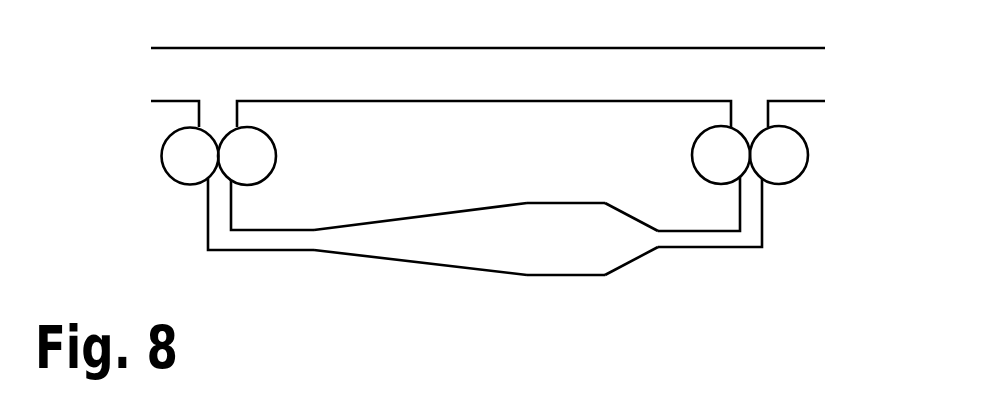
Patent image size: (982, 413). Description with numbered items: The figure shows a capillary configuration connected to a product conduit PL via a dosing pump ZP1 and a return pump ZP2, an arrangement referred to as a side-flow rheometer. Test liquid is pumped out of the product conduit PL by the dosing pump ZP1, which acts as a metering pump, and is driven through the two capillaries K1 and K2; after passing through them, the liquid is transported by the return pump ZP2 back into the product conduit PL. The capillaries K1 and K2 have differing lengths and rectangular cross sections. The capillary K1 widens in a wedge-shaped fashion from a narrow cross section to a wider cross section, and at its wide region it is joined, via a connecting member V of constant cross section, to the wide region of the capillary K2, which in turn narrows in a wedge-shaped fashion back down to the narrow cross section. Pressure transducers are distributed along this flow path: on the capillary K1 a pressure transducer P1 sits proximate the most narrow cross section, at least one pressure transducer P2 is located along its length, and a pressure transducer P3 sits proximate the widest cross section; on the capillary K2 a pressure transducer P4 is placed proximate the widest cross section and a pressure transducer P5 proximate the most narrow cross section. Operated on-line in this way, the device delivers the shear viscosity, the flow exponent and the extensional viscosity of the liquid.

The product conduit PL is at (488, 70).
The dosing pump ZP1 is at (174, 165).
The return pump ZP2 is at (797, 162).
The capillary K1 is at (413, 217).
The connecting member V is at (553, 200).
The capillary K2 is at (627, 212).
The pressure transducer P1 is at (313, 230).
The pressure transducer P2 is at (420, 262).
The pressure transducer P3 is at (527, 203).
The pressure transducer P4 is at (606, 203).
The pressure transducer P5 is at (659, 231).